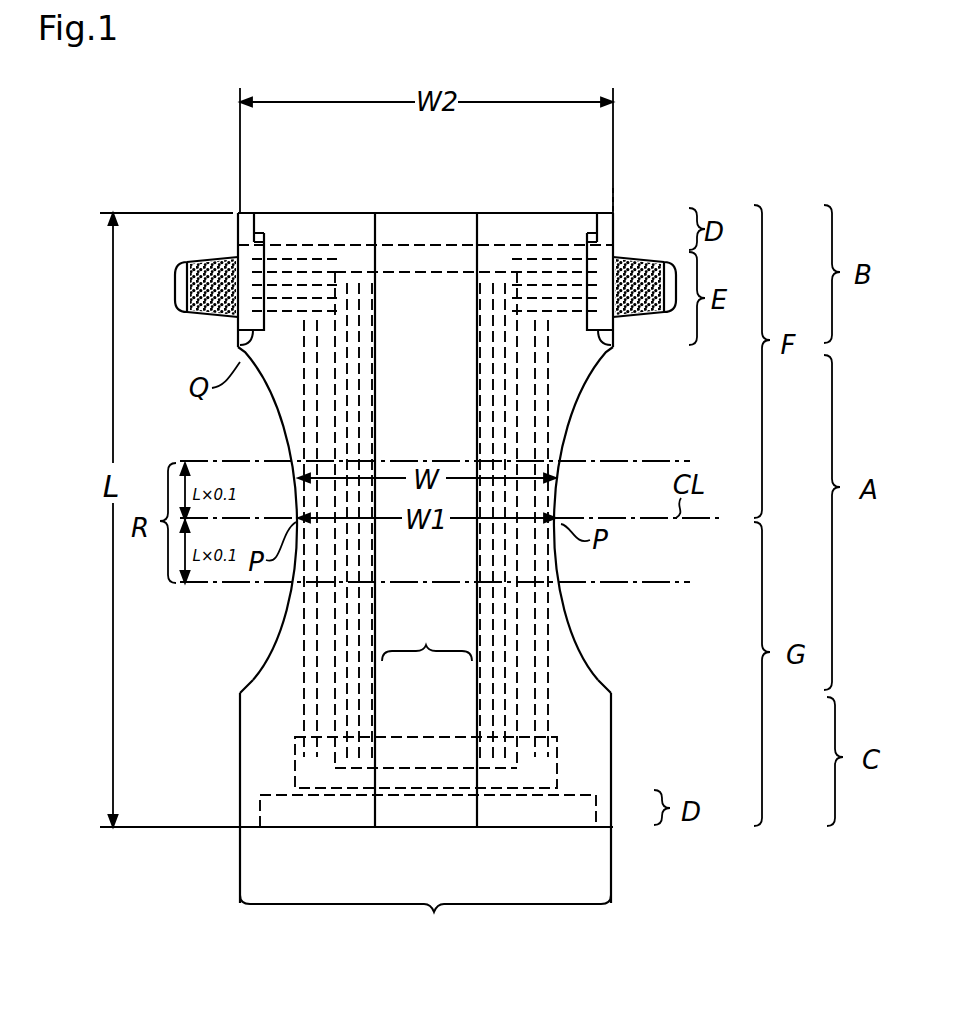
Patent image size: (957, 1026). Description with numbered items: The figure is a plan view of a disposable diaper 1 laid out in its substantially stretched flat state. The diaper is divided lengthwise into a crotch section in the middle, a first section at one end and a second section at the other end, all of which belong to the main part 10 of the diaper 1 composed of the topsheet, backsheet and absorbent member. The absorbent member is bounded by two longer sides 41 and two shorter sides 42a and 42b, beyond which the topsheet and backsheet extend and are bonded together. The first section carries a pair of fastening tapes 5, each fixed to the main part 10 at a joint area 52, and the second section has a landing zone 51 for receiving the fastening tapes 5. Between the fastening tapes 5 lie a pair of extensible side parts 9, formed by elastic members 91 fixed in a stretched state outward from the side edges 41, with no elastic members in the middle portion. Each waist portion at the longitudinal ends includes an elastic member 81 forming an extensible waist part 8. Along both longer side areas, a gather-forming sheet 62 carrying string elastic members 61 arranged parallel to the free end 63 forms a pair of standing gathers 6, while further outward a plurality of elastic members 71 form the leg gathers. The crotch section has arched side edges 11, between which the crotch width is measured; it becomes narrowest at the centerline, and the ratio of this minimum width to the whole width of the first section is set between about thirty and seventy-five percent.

The disposable diaper 1 is at (199, 150).
The fastening tapes 5 is at (203, 262).
The standing gathers 6 is at (470, 438).
The extensible waist part 8 is at (404, 232).
The extensible side parts 9 is at (285, 238).
The main part of the diaper 10 is at (425, 925).
The arched side edges of the crotch section 11 is at (560, 487).
The longer sides of the absorbent member 41 is at (333, 400).
The shorter side of the absorbent member 42a is at (440, 270).
The shorter side of the absorbent member 42b is at (416, 770).
The landing zone 51 is at (293, 757).
The joint areas 52 is at (236, 346).
The elastic members of the standing gathers 61 is at (358, 604).
The gather-forming sheet 62 is at (258, 682).
The free end of the standing gathers 63 is at (427, 637).
The elastic members of the leg gathers 71 is at (313, 442).
The waist elastic member 81 is at (617, 225).
The elastic members of the extensible side parts 91 is at (328, 280).